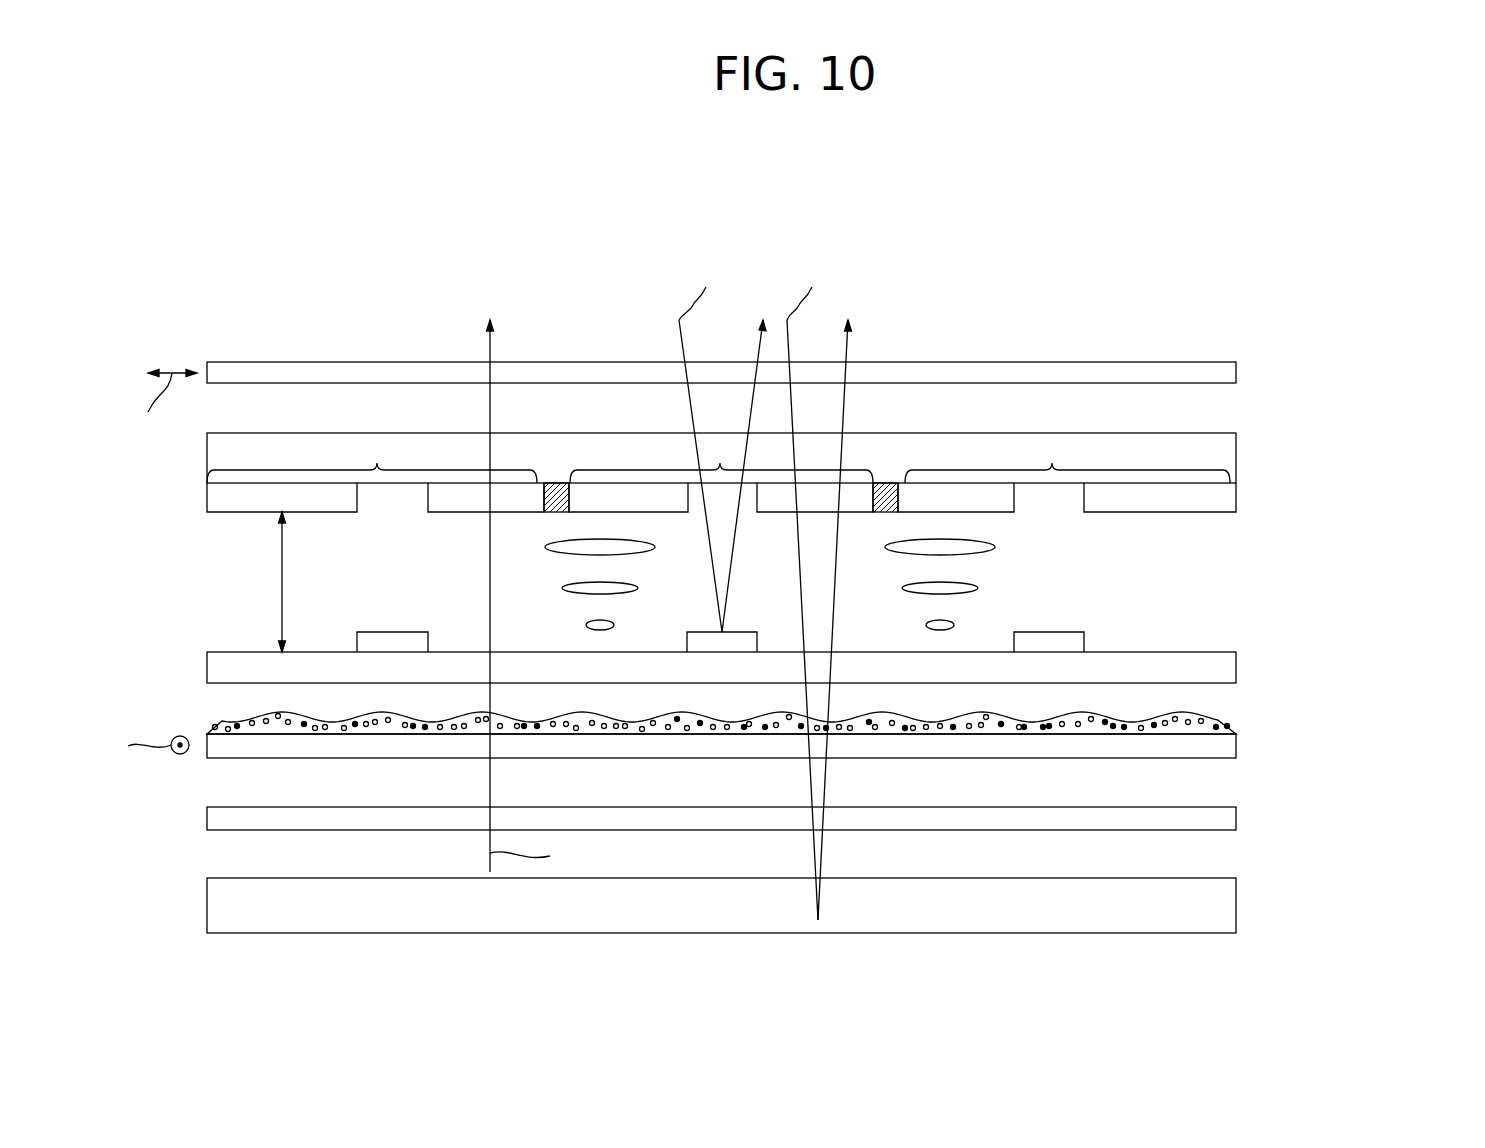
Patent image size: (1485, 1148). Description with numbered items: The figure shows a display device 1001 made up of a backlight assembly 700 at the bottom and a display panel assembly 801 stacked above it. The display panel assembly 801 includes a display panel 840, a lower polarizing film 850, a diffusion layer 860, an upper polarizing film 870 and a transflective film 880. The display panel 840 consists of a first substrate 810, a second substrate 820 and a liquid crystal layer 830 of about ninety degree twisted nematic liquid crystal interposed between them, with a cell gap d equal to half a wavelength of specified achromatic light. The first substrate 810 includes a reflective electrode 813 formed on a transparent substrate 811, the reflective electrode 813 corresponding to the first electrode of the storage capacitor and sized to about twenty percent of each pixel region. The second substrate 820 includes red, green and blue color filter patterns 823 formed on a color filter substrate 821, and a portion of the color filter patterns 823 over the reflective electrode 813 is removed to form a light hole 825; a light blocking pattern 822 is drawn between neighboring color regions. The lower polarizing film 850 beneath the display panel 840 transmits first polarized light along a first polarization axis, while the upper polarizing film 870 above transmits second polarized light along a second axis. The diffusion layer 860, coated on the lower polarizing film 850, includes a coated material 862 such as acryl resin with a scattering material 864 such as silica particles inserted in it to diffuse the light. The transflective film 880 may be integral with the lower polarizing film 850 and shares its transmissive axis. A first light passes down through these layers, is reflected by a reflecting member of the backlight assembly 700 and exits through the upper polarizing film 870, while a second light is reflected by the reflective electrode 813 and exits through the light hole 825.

The display device 1001 is at (823, 218).
The display panel assembly 801 is at (1426, 833).
The upper polarizing film 870 is at (1236, 373).
The display panel 840 is at (1370, 485).
The second substrate 820 is at (1310, 448).
The color filter substrate 821 is at (1236, 452).
The light blocking pattern 822 is at (887, 483).
The RGB color filter patterns 823 is at (1236, 495).
The light hole 825 is at (1031, 492).
The liquid crystal layer 830 is at (1124, 563).
The first substrate 810 is at (1310, 593).
The reflective electrode 813 is at (1053, 632).
The transparent substrate 811 is at (1236, 665).
The diffusion layer 860 is at (1370, 693).
The scattering material 864 is at (1218, 715).
The coated material 862 is at (1236, 728).
The lower polarizing film 850 is at (1236, 748).
The transflective film 880 is at (1236, 818).
The backlight assembly 700 is at (1236, 907).